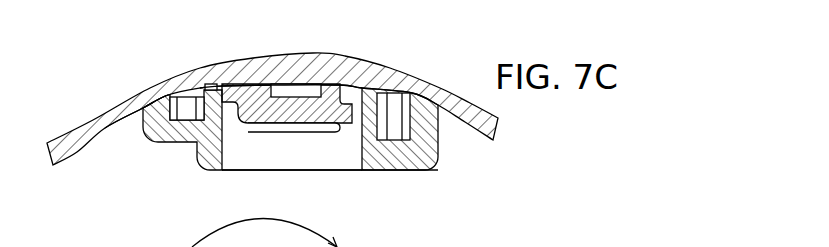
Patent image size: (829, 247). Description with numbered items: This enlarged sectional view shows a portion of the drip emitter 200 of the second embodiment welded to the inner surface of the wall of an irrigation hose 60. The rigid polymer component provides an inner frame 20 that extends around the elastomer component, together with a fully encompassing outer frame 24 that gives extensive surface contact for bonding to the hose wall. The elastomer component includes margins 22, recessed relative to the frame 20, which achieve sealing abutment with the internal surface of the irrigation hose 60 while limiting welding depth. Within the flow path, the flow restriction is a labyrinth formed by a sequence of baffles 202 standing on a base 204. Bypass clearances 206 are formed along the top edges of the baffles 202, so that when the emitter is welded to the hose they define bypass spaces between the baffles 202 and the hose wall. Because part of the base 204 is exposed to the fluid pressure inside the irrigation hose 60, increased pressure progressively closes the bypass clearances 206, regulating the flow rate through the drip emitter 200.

The frame 20 is at (209, 83).
The margins 22 is at (270, 85).
The outer frame 24 is at (148, 107).
The irrigation hose 60 is at (479, 0).
The drip emitter 200 is at (435, 203).
The baffles 202 is at (304, 81).
The base 204 is at (289, 124).
The bypass clearances 206 is at (299, 82).